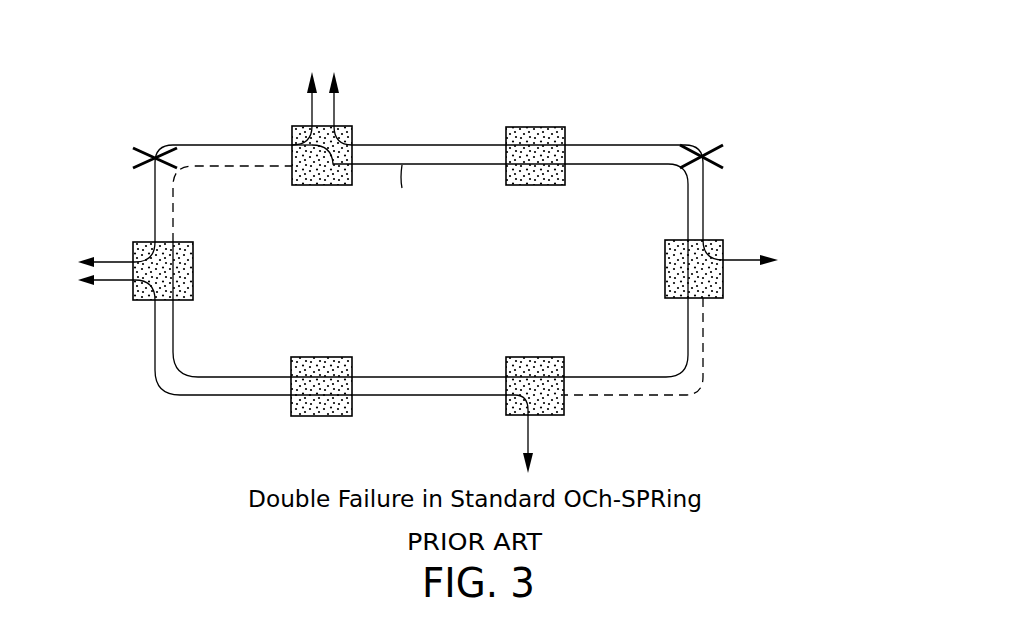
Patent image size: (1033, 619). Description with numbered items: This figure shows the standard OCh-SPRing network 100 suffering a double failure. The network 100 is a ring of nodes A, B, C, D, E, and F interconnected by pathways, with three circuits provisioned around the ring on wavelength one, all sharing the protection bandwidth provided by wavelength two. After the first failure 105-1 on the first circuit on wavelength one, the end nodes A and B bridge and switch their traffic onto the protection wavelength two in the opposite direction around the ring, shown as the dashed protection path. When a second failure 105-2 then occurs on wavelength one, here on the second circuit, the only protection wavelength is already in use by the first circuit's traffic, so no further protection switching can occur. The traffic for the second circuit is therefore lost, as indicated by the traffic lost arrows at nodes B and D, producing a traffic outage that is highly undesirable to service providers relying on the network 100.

The standard OCh-SPRing network 100 is at (657, 44).
The single failure 105-1 is at (140, 147).
The second failure 105-2 is at (720, 143).